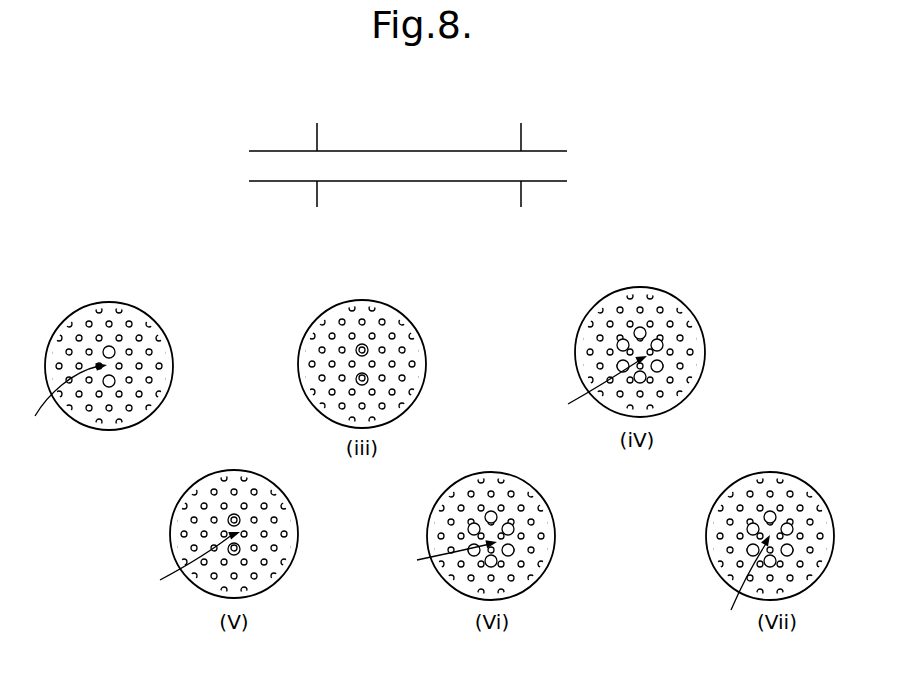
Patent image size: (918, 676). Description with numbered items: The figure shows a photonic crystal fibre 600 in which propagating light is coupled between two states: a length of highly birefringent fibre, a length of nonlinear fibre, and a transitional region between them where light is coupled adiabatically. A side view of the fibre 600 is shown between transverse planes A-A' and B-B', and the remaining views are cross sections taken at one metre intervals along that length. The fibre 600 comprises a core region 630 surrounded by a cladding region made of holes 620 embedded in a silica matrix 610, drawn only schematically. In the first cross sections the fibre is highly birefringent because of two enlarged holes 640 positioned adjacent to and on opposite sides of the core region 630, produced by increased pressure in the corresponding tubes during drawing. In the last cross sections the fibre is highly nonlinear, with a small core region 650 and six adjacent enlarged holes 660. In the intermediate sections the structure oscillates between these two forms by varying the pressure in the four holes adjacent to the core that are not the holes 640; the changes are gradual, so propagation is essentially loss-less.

The photonic crystal fibre 600 is at (540, 143).
The silica matrix 610 is at (131, 316).
The holes 620 is at (96, 308).
The core region 630 is at (127, 478).
The enlarged holes 640 is at (103, 386).
The small core region 650 is at (663, 343).
The enlarged holes 660 is at (575, 493).